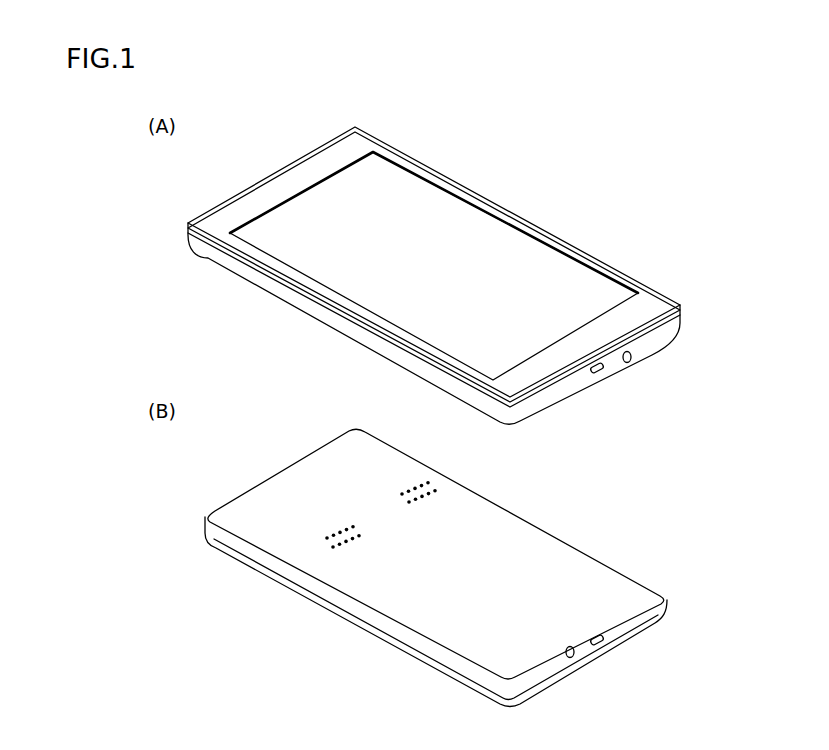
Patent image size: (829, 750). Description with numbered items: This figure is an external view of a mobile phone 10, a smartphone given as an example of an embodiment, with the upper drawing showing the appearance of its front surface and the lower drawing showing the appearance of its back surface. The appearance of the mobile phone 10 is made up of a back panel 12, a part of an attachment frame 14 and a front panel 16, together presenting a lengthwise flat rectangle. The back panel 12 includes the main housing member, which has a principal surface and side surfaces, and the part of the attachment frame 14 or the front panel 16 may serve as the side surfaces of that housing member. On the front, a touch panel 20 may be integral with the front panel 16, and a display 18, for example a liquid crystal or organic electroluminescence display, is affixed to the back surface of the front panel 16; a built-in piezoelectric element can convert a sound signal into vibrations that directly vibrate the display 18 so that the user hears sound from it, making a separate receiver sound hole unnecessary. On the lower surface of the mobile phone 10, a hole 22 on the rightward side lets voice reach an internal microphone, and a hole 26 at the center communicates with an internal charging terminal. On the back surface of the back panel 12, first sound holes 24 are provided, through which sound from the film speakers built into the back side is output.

The mobile phone 10 is at (224, 147).
The back panel 12 is at (360, 343).
The attachment frame 14 is at (558, 238).
The front panel 16 is at (603, 267).
The display 18 is at (450, 192).
The touch panel 20 is at (503, 240).
The hole 22 is at (627, 364).
The first sound holes 24 is at (362, 539).
The hole 26 is at (594, 378).